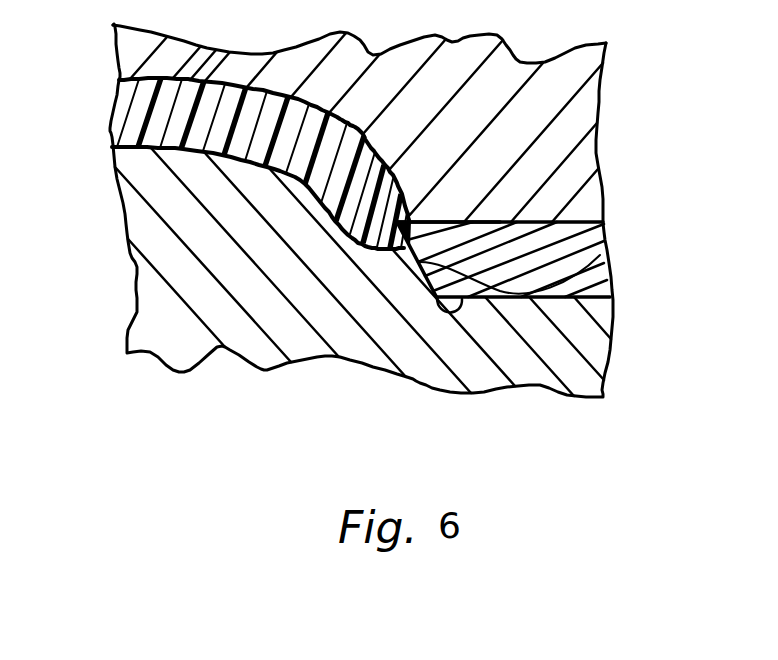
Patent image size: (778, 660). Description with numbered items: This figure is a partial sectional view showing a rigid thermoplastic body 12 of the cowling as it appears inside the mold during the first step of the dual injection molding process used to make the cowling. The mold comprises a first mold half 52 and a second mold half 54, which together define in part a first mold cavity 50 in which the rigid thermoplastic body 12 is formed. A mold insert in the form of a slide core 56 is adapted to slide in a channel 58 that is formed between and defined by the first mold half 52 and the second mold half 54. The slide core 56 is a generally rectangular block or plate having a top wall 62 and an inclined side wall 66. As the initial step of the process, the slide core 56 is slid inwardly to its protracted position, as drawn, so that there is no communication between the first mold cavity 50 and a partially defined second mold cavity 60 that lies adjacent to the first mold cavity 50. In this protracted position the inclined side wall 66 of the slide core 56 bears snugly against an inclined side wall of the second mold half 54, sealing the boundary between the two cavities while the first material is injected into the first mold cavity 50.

The ceramic component / honeycomb body 12 is at (138, 117).
The first mold cavity 50 is at (216, 50).
The first mold half 52 is at (165, 58).
The second mold half 54 is at (183, 268).
The slide core 56 is at (586, 249).
The channel 58 is at (565, 221).
The second mold cavity 60 is at (440, 312).
The top wall 62 is at (463, 220).
The inclined side wall 66 is at (575, 296).